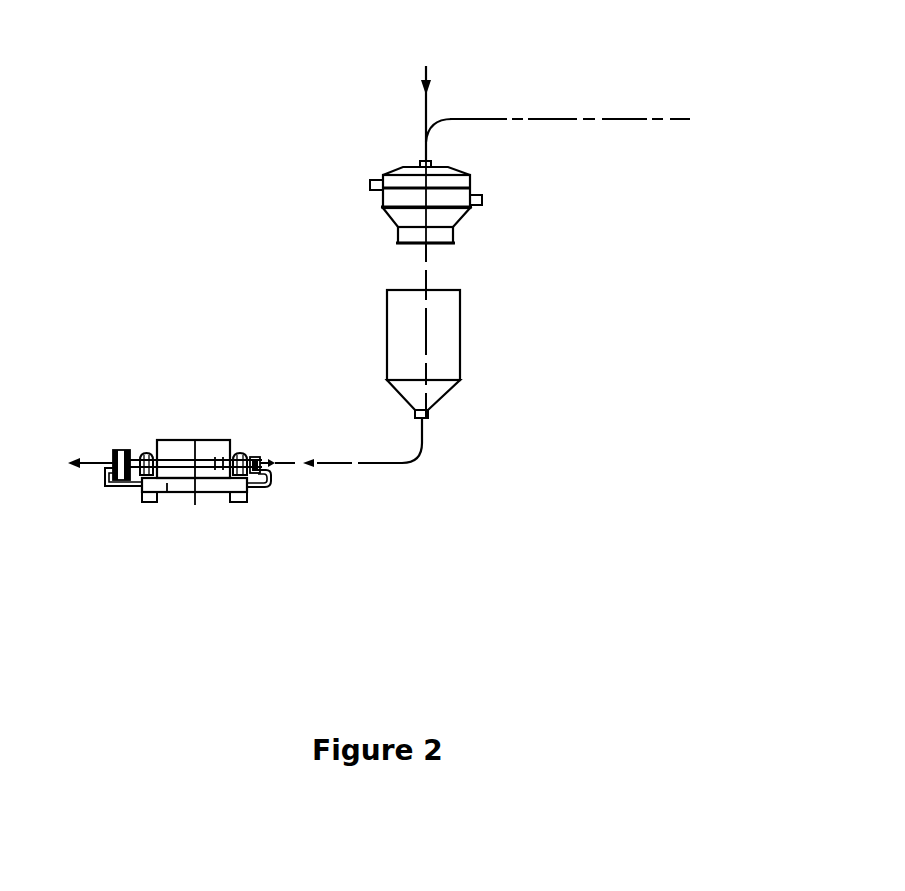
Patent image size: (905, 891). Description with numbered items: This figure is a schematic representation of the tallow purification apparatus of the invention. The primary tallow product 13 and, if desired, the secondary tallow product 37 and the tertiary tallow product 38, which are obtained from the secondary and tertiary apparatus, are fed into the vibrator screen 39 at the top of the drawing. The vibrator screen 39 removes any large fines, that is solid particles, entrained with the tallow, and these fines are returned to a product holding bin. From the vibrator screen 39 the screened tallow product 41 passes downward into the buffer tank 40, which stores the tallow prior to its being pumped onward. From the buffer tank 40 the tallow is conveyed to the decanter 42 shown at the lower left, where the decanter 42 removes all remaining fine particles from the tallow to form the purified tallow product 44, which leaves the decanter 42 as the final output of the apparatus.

The primary tallow product 13 is at (433, 100).
The secondary tallow product 37 is at (598, 125).
The tertiary tallow product 38 is at (598, 125).
The vibrator screen 39 is at (398, 181).
The buffer tank 40 is at (376, 348).
The tallow product 41 is at (426, 272).
The decanter 42 is at (184, 440).
The purified tallow product 44 is at (76, 462).